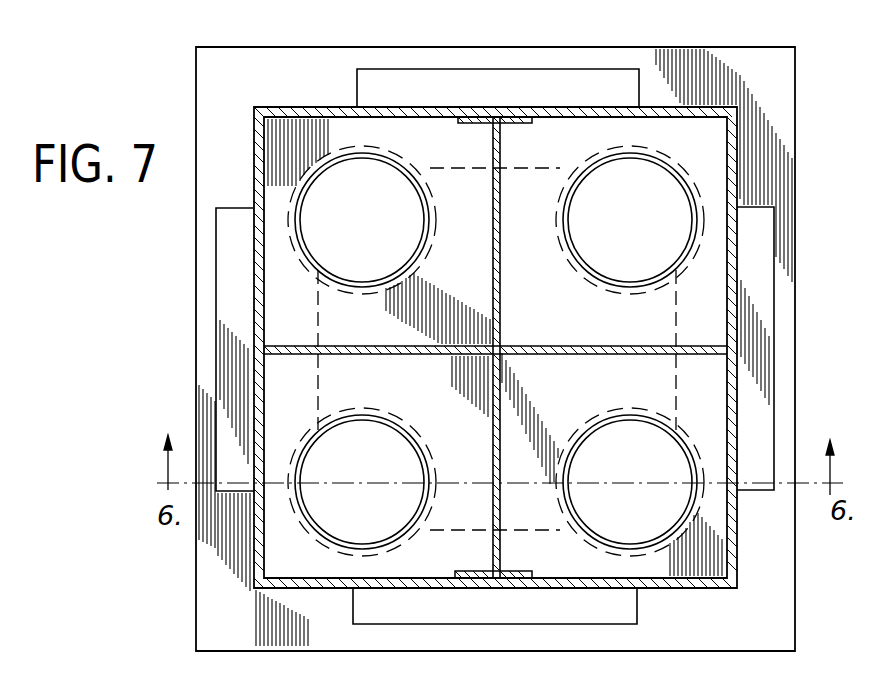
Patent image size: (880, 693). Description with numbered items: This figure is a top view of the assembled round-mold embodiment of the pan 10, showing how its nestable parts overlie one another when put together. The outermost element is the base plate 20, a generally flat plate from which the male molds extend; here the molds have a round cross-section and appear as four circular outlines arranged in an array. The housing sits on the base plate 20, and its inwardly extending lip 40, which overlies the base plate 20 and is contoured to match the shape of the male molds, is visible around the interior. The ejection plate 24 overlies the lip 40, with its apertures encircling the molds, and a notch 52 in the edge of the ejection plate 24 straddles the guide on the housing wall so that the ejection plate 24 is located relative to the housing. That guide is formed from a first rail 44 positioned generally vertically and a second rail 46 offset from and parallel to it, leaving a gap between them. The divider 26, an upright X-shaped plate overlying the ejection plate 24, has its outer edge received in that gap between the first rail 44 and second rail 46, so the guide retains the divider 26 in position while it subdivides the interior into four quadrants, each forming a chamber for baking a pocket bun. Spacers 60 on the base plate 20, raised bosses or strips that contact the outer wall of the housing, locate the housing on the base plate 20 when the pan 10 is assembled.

The pan 10 is at (178, 311).
The base plate 20 is at (196, 77).
The ejection plate 24 is at (644, 330).
The divider 26 is at (504, 291).
The lip 40 is at (680, 384).
The first rail 44 is at (470, 581).
The second rail 46 is at (512, 581).
The notch 52 is at (495, 577).
The spacers 60 is at (228, 432).